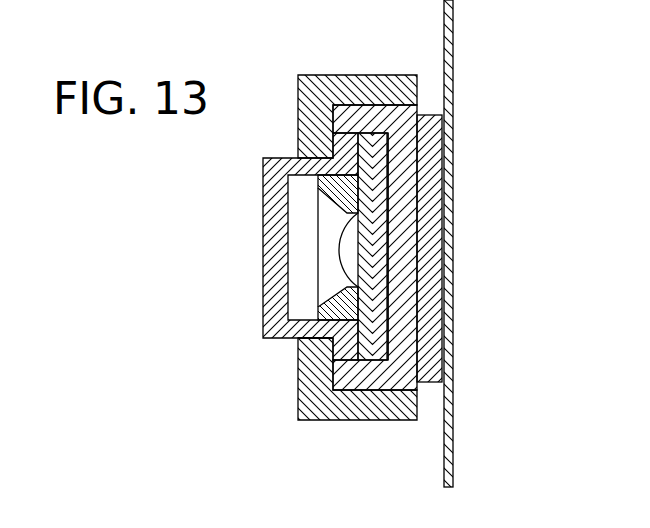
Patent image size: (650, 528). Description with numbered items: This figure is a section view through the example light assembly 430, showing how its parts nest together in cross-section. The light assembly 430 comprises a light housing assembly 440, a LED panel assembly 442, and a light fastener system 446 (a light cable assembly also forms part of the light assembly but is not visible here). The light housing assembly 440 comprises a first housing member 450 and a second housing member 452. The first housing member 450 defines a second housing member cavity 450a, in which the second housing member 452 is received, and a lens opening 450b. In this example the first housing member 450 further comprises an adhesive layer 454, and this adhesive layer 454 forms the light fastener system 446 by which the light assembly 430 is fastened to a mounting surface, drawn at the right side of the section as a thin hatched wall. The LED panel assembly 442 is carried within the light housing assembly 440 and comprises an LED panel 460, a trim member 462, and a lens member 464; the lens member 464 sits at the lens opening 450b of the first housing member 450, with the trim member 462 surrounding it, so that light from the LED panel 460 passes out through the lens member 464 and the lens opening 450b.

The light assembly 430 is at (283, 57).
The light housing assembly 440 is at (343, 72).
The LED panel assembly 442 is at (392, 176).
The light fastener system 446 is at (443, 193).
The first housing member 450 is at (293, 277).
The second housing member cavity 450a is at (355, 384).
The lens opening 450b is at (310, 330).
The second housing member 452 is at (390, 236).
The adhesive layer 454 is at (445, 249).
The LED panel 460 is at (375, 291).
The trim member 462 is at (337, 190).
The lens member 464 is at (268, 232).